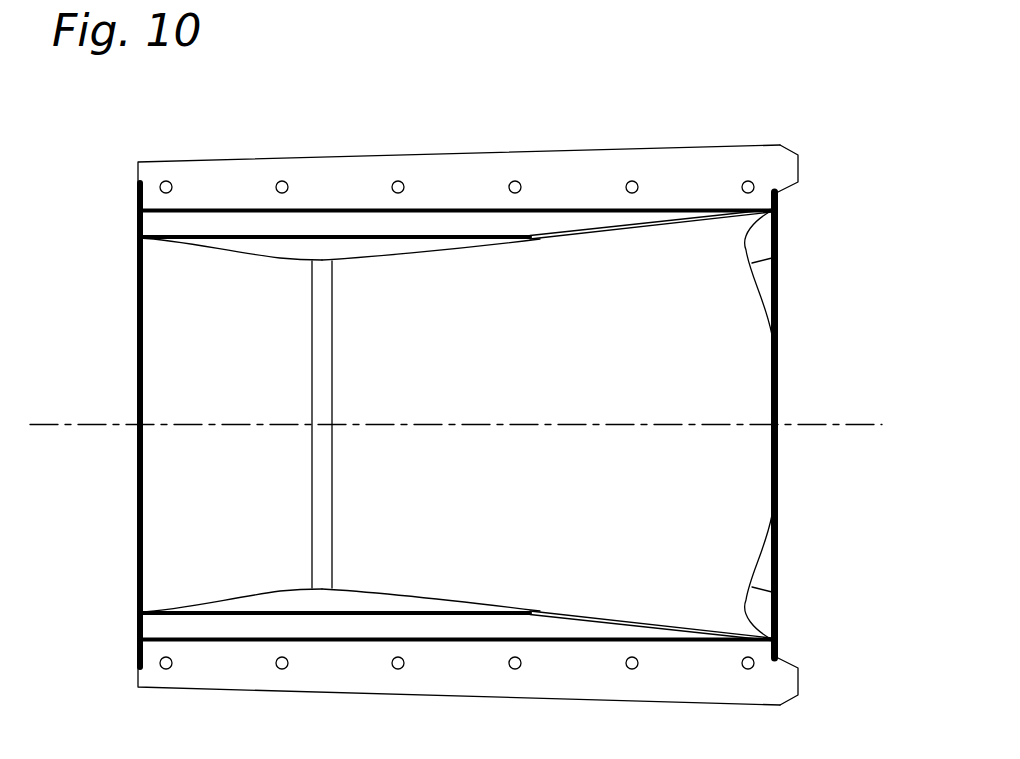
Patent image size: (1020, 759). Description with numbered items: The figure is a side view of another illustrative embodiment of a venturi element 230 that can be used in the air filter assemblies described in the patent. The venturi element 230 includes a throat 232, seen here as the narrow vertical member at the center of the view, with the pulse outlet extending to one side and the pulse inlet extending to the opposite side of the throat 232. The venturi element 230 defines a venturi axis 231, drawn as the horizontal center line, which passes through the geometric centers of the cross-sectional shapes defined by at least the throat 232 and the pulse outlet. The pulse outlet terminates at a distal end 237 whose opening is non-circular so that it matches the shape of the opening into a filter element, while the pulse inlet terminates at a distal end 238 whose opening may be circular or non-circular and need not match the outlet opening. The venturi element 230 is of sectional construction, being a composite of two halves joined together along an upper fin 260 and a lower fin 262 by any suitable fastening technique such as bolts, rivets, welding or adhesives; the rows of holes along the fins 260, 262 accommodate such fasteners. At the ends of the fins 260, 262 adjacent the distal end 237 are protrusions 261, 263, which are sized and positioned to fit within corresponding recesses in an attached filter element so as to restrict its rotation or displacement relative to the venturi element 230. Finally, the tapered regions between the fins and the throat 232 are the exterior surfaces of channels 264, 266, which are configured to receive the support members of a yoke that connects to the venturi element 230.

The venturi element 230 is at (697, 112).
The venturi axis 231 is at (117, 423).
The throat 232 is at (322, 258).
The distal end of the pulse outlet 237 is at (778, 282).
The distal end of the pulse inlet 238 is at (137, 267).
The fin 260 is at (493, 150).
The protrusion 261 is at (798, 170).
The fin 262 is at (597, 705).
The protrusion 263 is at (798, 680).
The channel 264 is at (250, 222).
The channel 266 is at (338, 627).